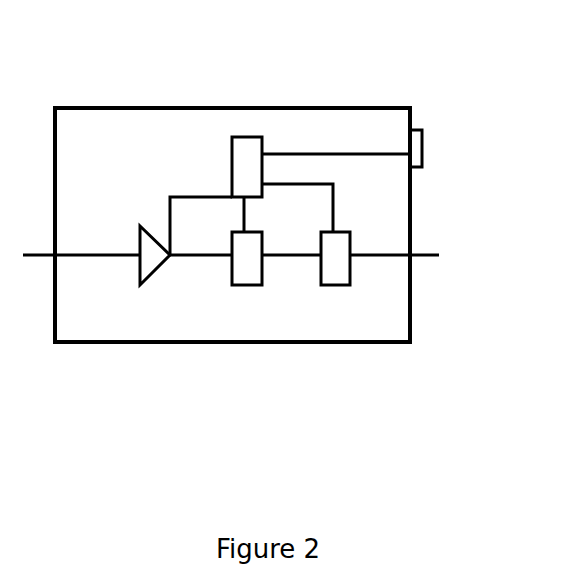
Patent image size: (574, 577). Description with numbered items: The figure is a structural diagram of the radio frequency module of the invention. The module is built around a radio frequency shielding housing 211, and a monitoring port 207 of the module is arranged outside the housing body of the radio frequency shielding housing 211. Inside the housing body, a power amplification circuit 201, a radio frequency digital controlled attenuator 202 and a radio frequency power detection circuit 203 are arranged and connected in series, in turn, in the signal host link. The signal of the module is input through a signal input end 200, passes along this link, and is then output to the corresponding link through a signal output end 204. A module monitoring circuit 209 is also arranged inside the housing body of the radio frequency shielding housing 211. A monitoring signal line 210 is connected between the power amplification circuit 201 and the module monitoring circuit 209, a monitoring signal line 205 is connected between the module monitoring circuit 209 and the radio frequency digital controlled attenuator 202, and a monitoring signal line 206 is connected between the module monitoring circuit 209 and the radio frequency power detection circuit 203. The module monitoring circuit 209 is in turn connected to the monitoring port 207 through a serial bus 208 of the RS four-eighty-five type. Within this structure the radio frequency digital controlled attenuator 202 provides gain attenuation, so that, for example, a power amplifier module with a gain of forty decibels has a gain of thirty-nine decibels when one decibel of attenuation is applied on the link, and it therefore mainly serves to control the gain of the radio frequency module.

The signal input end 200 is at (42, 274).
The power amplification circuit 201 is at (148, 304).
The radio frequency digital controlled attenuator 202 is at (249, 304).
The radio frequency power detection circuit 203 is at (338, 304).
The signal output end 204 is at (432, 278).
The monitoring signal line 205 is at (266, 219).
The monitoring signal line 206 is at (356, 201).
The monitoring port 207 is at (433, 116).
The RS-485 bus 208 is at (326, 131).
The module monitoring circuit 209 is at (249, 114).
The monitoring signal line 210 is at (189, 179).
The radio frequency shielding housing 211 is at (89, 100).